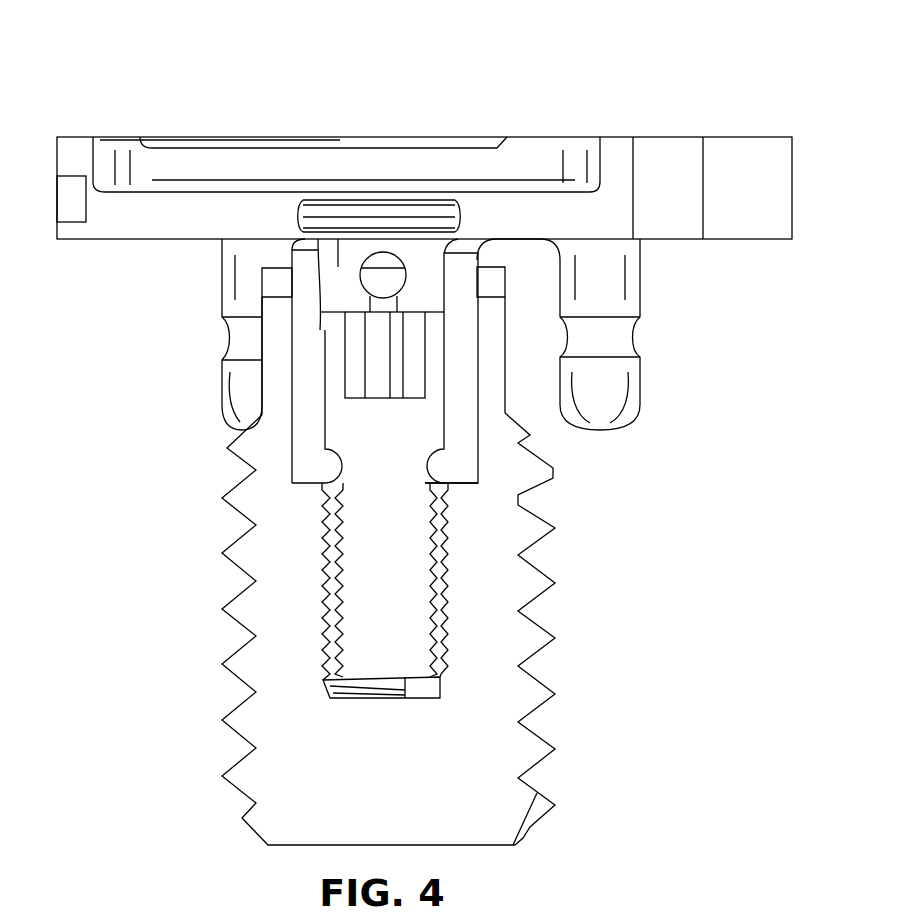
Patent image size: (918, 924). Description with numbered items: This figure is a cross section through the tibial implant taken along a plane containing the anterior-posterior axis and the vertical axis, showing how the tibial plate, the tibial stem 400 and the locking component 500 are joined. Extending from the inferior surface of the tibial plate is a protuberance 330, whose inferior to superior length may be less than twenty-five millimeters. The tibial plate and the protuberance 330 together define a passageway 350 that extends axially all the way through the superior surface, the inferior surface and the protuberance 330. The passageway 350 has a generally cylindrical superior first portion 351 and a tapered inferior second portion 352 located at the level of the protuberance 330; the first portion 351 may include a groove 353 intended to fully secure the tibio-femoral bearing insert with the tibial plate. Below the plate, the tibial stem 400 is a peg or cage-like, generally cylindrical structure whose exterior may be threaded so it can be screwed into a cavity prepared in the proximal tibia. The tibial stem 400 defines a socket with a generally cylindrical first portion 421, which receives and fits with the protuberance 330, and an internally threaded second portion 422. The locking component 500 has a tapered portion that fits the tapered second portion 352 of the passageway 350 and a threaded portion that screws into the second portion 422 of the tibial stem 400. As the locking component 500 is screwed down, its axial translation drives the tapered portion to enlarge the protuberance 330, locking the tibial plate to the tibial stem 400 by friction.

The protuberance 330 is at (465, 398).
The passageway 350 is at (338, 267).
The first portion 351 is at (446, 292).
The second portion 352 is at (321, 312).
The groove 353 is at (363, 212).
The tibial stem 400 is at (657, 653).
The first portion 421 is at (478, 458).
The second portion 422 is at (450, 590).
The locking component 500 is at (350, 427).